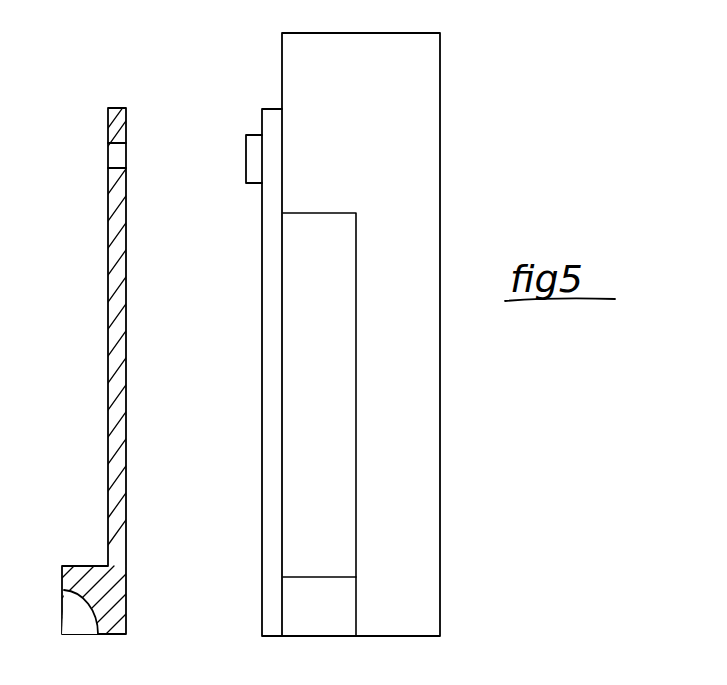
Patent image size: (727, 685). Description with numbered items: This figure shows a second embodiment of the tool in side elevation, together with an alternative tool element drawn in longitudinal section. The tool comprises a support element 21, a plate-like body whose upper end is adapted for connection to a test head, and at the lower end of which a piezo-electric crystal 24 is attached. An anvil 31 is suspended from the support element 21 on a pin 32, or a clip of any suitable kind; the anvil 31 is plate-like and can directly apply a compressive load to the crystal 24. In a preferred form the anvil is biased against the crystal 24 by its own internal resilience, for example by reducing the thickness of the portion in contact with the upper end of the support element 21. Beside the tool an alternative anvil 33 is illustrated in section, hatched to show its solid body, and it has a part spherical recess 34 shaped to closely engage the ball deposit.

The support element 21 is at (425, 408).
The piezo-electric crystal 24 is at (316, 596).
The anvil 31 is at (278, 351).
The pin 32 is at (248, 153).
The alternative anvil 33 is at (120, 453).
The part spherical recess 34 is at (68, 596).